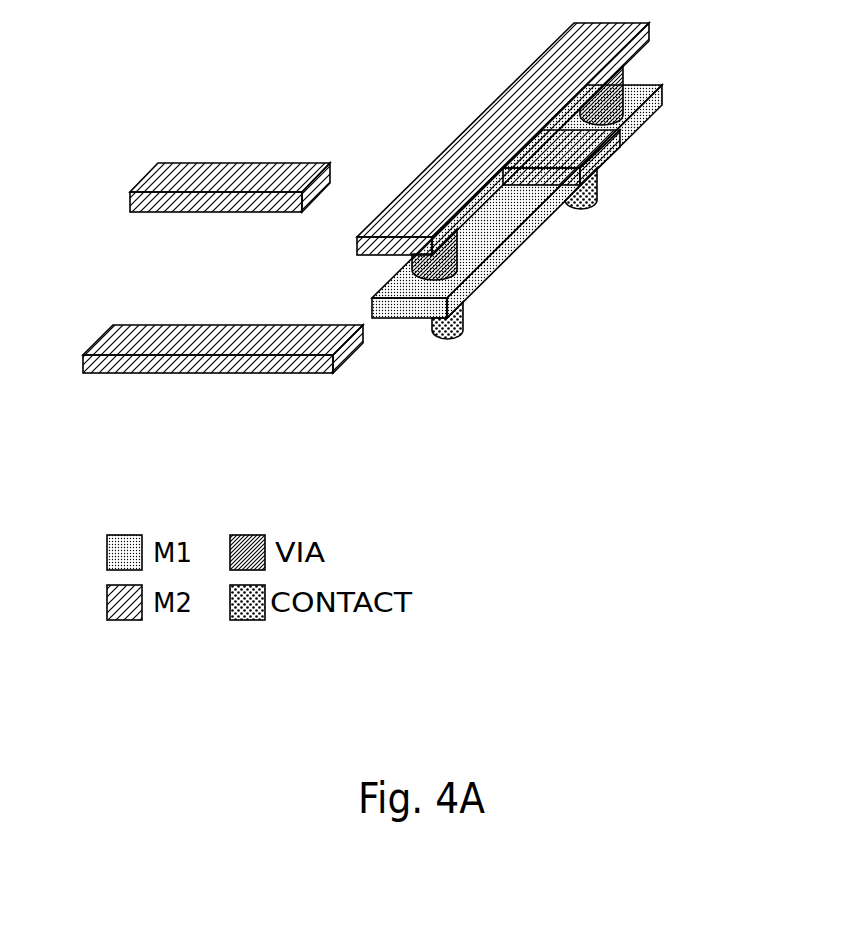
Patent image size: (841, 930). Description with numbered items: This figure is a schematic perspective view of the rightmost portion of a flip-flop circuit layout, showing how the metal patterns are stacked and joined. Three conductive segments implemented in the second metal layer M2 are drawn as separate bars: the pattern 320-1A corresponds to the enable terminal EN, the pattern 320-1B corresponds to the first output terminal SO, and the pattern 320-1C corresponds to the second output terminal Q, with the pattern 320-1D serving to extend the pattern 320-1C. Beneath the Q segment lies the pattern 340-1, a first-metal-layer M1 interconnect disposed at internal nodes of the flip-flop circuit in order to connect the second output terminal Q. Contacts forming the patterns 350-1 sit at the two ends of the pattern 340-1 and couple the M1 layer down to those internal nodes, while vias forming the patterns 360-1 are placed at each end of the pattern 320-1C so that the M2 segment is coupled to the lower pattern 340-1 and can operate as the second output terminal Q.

The pattern 320-1A is at (203, 377).
The pattern 320-1B is at (213, 213).
The pattern 320-1C is at (513, 83).
The pattern 320-1D is at (558, 150).
The pattern 340-1 is at (545, 221).
The patterns 350-1 is at (463, 325).
The patterns 360-1 is at (457, 252).